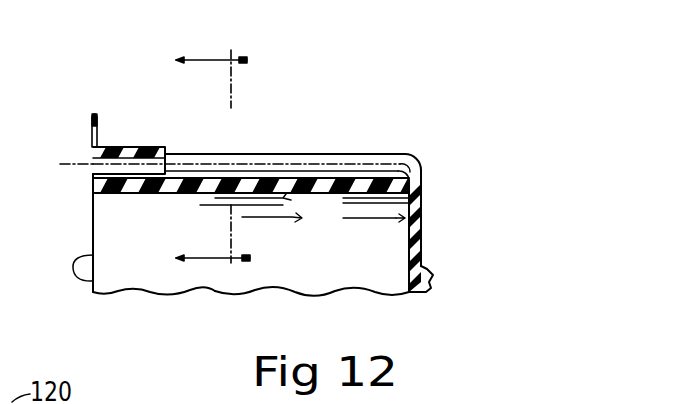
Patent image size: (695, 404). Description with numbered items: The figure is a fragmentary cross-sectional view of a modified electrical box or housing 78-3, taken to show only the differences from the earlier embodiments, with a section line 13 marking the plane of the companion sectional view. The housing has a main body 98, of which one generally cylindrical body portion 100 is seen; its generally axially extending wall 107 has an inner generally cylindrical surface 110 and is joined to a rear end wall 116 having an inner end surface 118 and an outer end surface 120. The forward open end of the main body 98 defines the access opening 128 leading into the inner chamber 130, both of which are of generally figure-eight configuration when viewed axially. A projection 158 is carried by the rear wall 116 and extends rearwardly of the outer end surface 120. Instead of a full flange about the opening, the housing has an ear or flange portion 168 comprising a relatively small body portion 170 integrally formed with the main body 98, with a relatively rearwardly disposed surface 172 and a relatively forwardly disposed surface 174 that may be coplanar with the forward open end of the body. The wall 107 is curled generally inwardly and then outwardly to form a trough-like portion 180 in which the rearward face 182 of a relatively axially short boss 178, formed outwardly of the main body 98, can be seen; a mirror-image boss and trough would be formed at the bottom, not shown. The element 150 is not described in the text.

The section line 13- 13 is at (206, 135).
The electrical box or housing 78-3 is at (318, 99).
The main body 98 is at (242, 296).
The body portion 100 is at (288, 294).
The axially extending wall 107 is at (343, 190).
The inner cylindrical surface 110 is at (262, 244).
The rear end wall 116 is at (414, 227).
The inner end surface 118 is at (411, 262).
The outer end surface 120 is at (421, 262).
The access opening 128 is at (94, 282).
The inner chamber 130 is at (134, 222).
The side wall 150 is at (90, 168).
The projection 158 is at (429, 273).
The ear or flange portion 168 is at (91, 121).
The body portion of ear 170 is at (93, 114).
The rearwardly disposed surface 172 is at (100, 128).
The forwardly disposed surface 174 is at (92, 147).
The boss 178 is at (143, 147).
The trough-like portion 180 is at (221, 207).
The rearward face of boss 182 is at (195, 153).